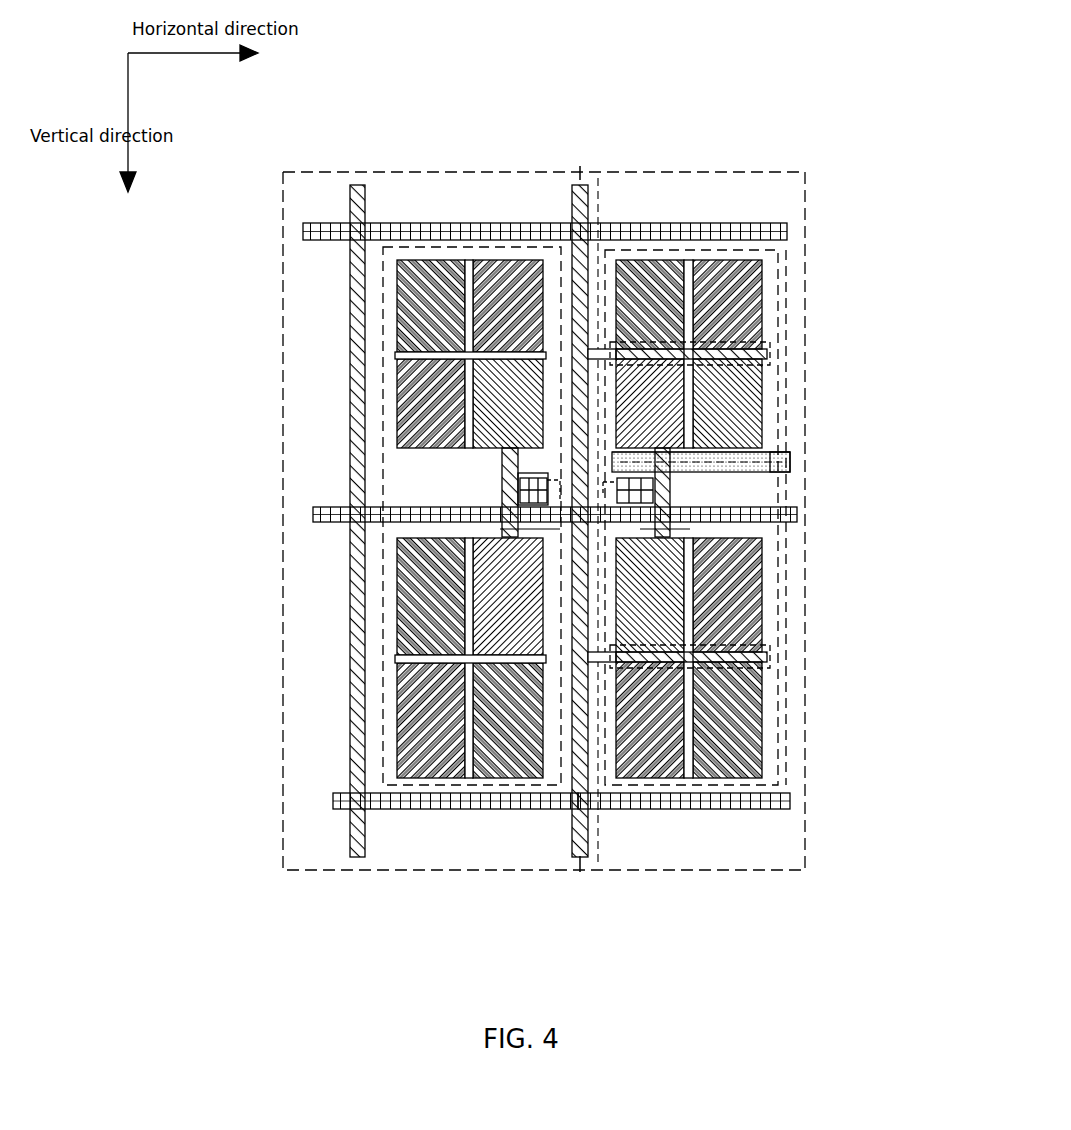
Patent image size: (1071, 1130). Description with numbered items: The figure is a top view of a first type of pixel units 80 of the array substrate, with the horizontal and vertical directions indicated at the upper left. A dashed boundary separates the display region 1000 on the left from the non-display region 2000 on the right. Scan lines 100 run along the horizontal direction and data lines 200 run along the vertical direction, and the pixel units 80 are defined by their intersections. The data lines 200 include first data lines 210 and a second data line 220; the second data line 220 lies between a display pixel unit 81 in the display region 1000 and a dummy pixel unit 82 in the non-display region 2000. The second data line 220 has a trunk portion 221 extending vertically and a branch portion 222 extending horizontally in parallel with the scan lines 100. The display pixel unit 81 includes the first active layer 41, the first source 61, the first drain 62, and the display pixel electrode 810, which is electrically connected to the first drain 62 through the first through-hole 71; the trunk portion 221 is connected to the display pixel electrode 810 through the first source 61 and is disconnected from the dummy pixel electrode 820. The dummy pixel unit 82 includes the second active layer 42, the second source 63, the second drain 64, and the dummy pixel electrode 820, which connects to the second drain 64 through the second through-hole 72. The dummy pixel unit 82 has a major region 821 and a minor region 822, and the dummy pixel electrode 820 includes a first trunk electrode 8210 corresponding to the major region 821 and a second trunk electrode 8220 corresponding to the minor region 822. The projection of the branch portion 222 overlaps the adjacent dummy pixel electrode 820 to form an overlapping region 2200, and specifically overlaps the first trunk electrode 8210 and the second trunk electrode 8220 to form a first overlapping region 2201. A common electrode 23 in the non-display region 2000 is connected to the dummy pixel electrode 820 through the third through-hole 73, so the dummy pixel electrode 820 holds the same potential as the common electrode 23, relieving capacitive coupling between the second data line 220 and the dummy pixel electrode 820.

The display region 1000 is at (280, 171).
The non-display region 2000 is at (807, 171).
The data lines 200 is at (483, 463).
The first data lines 210 is at (360, 190).
The second data line 220 is at (575, 483).
The trunk portion 221 is at (578, 187).
The branch portion 222 is at (601, 196).
The scan lines 100 is at (787, 229).
The first overlapping region 2201 is at (769, 326).
The overlapping region 2200 is at (768, 340).
The first trunk electrode 8210 is at (767, 351).
The second trunk electrode 8220 is at (767, 653).
The minor region 822 is at (777, 783).
The first through-hole 71 is at (508, 446).
The first active layer 41 is at (518, 474).
The first source 61 is at (520, 490).
The first drain 62 is at (520, 530).
The second through-hole 72 is at (662, 440).
The third through-hole 73 is at (662, 448).
The common electrode 23 is at (786, 461).
The major region 821 is at (790, 470).
The second active layer 42 is at (668, 489).
The second source 63 is at (664, 519).
The second drain 64 is at (666, 536).
The pixel units 80 is at (561, 887).
The display pixel electrode 810 is at (455, 865).
The display pixel units 81 is at (562, 810).
The dummy pixel electrode 820 is at (684, 865).
The dummy pixel units 82 is at (600, 810).